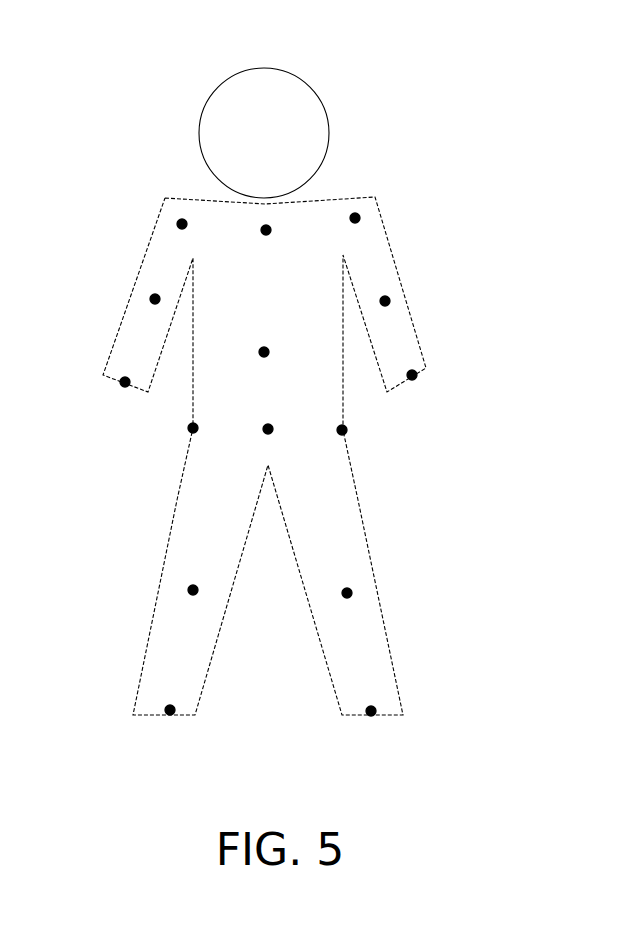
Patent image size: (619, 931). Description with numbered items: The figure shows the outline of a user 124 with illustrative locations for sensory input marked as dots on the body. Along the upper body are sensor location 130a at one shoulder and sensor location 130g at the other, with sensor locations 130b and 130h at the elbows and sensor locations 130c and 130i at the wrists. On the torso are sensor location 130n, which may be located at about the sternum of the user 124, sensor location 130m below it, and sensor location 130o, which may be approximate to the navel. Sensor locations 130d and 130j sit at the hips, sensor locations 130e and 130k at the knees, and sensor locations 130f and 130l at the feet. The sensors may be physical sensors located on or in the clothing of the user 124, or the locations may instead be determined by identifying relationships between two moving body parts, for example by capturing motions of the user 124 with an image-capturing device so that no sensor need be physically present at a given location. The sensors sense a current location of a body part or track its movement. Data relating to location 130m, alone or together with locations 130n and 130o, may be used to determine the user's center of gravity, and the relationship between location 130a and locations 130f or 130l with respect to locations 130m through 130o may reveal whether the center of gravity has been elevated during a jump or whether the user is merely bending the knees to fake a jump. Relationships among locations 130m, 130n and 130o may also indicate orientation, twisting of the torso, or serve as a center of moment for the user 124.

The user 124 is at (378, 115).
The sensor location 130a is at (167, 216).
The sensor location 130b is at (142, 292).
The sensor location 130c is at (120, 377).
The sensor location 130d is at (183, 432).
The sensor location 130e is at (180, 582).
The sensor location 130f is at (150, 702).
The sensor location 130g is at (367, 210).
The sensor location 130h is at (398, 295).
The sensor location 130i is at (415, 363).
The sensor location 130j is at (357, 437).
The sensor location 130k is at (365, 587).
The sensor location 130l is at (385, 702).
The sensor location 130m is at (257, 343).
The sensor location 130n is at (260, 236).
The sensor location 130o is at (260, 422).